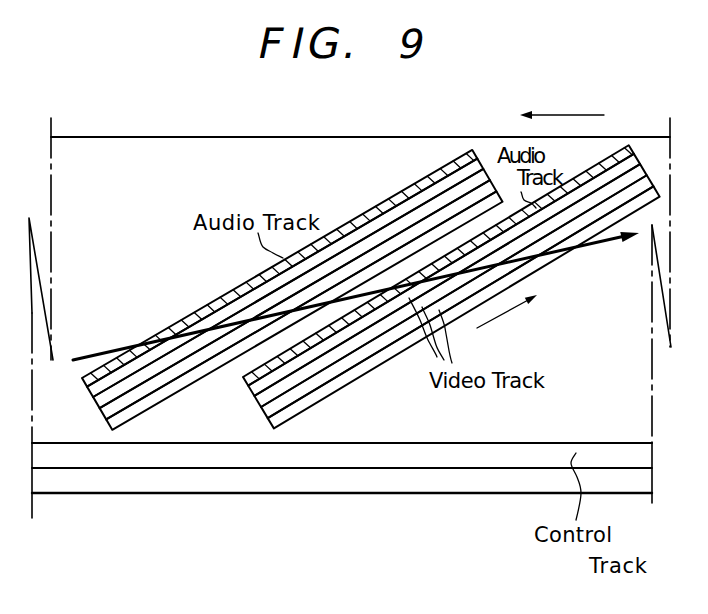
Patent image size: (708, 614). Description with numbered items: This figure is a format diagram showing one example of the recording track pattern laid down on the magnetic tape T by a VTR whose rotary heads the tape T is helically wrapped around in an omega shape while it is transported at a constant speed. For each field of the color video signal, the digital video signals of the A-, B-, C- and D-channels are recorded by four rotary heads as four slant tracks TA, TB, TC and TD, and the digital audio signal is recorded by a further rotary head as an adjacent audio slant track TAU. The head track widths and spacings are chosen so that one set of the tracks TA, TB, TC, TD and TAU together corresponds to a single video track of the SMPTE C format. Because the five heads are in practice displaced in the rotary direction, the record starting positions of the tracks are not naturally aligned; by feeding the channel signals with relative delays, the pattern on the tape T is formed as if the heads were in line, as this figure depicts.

The magnetic tape T is at (639, 393).
The audio slant track TAU is at (243, 377).
The A-channel slant track TA is at (87, 388).
The B-channel slant track TB is at (94, 398).
The C-channel slant track TC is at (110, 408).
The D-channel slant track TD is at (132, 415).